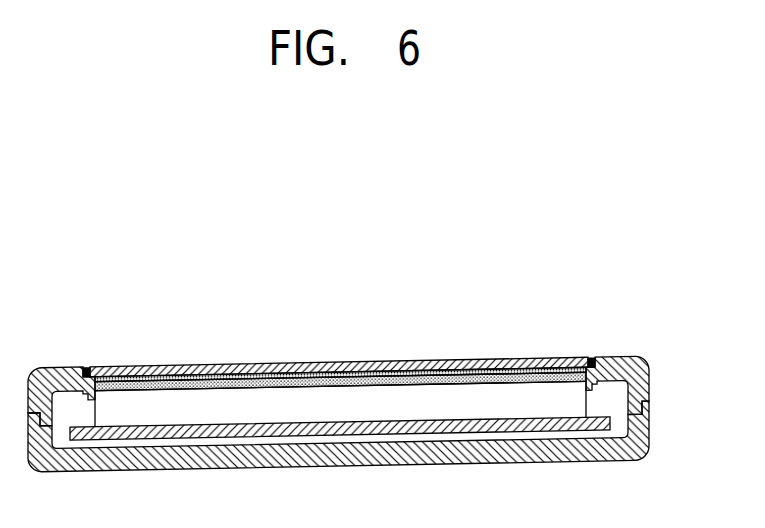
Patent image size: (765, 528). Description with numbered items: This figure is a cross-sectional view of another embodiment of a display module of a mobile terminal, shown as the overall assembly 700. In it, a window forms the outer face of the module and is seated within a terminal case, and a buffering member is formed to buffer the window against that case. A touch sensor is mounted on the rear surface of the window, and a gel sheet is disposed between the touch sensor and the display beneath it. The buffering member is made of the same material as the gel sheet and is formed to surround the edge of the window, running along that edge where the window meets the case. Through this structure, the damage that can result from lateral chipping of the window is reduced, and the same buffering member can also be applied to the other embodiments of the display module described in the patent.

The display device 700 is at (649, 324).